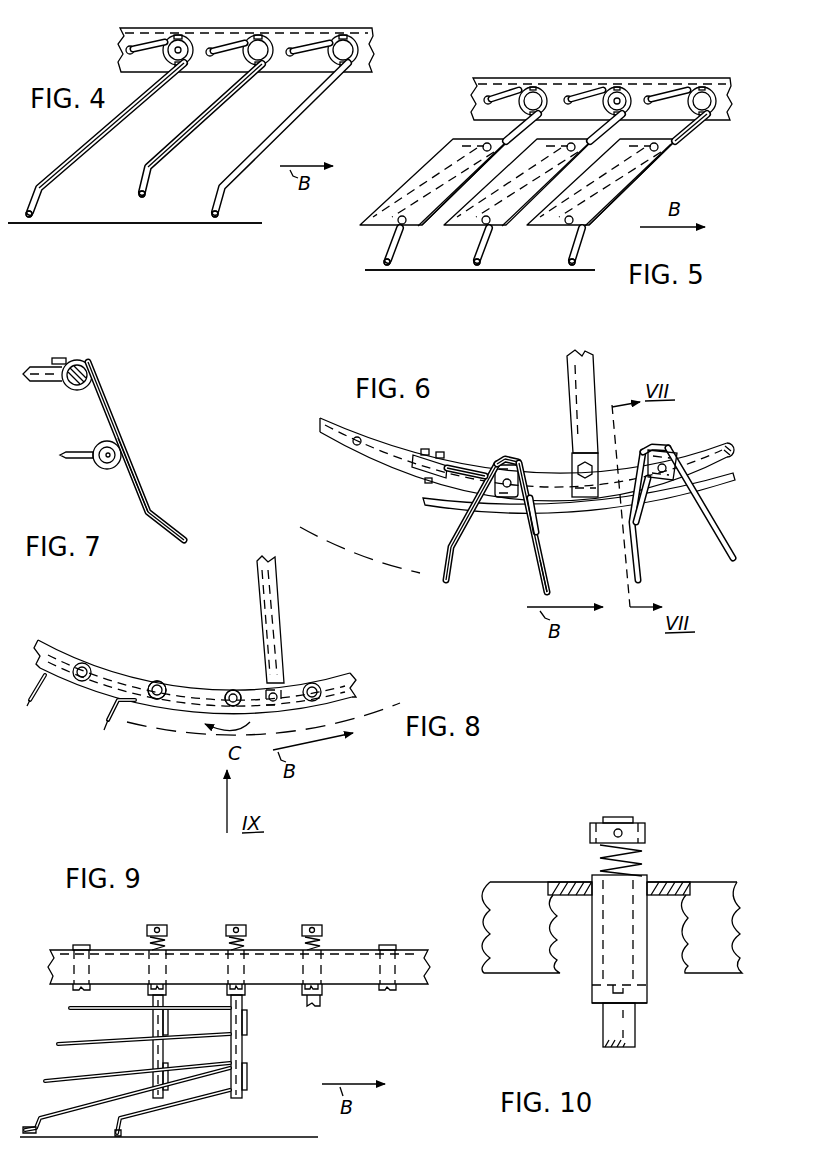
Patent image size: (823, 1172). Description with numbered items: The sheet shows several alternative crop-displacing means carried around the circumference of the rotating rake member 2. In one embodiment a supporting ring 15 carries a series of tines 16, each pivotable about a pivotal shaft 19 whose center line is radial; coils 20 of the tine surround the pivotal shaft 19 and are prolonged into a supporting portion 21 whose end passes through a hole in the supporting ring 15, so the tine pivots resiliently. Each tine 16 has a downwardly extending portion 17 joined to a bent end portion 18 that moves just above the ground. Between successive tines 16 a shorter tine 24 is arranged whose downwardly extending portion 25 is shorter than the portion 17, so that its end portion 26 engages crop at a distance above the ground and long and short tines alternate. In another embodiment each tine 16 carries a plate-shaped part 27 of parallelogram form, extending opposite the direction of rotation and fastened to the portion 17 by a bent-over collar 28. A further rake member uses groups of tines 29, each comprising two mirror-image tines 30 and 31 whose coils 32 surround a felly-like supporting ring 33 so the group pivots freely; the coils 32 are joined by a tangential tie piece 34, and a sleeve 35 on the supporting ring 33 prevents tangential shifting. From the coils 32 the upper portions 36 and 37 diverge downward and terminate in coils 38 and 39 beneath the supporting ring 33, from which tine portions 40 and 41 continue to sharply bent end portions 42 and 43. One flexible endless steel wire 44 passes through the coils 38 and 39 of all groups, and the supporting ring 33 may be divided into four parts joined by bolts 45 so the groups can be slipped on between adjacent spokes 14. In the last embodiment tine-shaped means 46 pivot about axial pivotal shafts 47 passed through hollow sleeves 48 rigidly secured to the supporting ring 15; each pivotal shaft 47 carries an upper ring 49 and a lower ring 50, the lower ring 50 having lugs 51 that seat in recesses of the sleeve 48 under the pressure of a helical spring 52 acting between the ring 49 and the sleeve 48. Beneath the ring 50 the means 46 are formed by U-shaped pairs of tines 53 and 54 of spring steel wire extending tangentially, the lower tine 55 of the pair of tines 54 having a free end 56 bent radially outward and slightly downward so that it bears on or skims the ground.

In FIG. 4, the rake member 2 is at (53, 166).
In FIG. 5, the rake member 2 is at (438, 152).
In FIG. 6, the rake member 2 is at (326, 532).
In FIG. 8, the rake member 2 is at (381, 720).
In FIG. 6, the spokes 14 is at (583, 375).
In FIG. 8, the spokes 14 is at (281, 643).
In FIG. 4, the supporting ring 15 is at (357, 79).
In FIG. 5, the supporting ring 15 is at (472, 113).
In FIG. 8, the supporting ring 15 is at (356, 680).
In FIG. 9, the supporting ring 15 is at (414, 985).
In FIG. 10, the supporting ring 15 is at (493, 897).
In FIG. 4, the tine 16 is at (296, 132).
In FIG. 5, the tine 16 is at (385, 244).
In FIG. 4, the downwardly extending portion 17 is at (94, 148).
In FIG. 5, the downwardly extending portion 17 is at (688, 144).
In FIG. 4, the end portion 18 is at (36, 212).
In FIG. 5, the end portion 18 is at (578, 259).
In FIG. 4, the pivotal shaft 19 is at (357, 51).
In FIG. 5, the pivotal shaft 19 is at (626, 92).
In FIG. 4, the coils 20 is at (355, 38).
In FIG. 5, the coils 20 is at (546, 89).
In FIG. 4, the supporting portion 21 is at (160, 38).
In FIG. 5, the supporting portion 21 is at (516, 85).
In FIG. 4, the tine 24 is at (190, 125).
In FIG. 4, the downwardly extending portion 25 is at (206, 118).
In FIG. 4, the end portion 26 is at (150, 183).
In FIG. 5, the plate-shaped part 27 is at (430, 170).
In FIG. 5, the collar 28 is at (650, 180).
In FIG. 6, the group of tines 29 is at (437, 616).
In FIG. 7, the tine 30 is at (126, 433).
In FIG. 6, the tine 30 is at (452, 546).
In FIG. 6, the tine 31 is at (551, 556).
In FIG. 7, the coil 32 is at (88, 362).
In FIG. 6, the coil 32 is at (497, 463).
In FIG. 7, the supporting ring 33 is at (44, 384).
In FIG. 6, the supporting ring 33 is at (344, 443).
In FIG. 7, the tie piece 34 is at (64, 358).
In FIG. 6, the tie piece 34 is at (510, 460).
In FIG. 6, the sleeve 35 is at (520, 460).
In FIG. 7, the upper portion 36 is at (108, 400).
In FIG. 6, the upper portion 36 is at (474, 468).
In FIG. 6, the upper portion 37 is at (530, 480).
In FIG. 7, the coil 38 is at (105, 470).
In FIG. 6, the coil 38 is at (462, 522).
In FIG. 6, the coil 39 is at (534, 528).
In FIG. 7, the tine portion 40 is at (150, 493).
In FIG. 6, the tine portion 40 is at (462, 549).
In FIG. 6, the tine portion 41 is at (541, 553).
In FIG. 7, the end portion 42 is at (192, 530).
In FIG. 6, the end portion 42 is at (450, 577).
In FIG. 6, the end portion 43 is at (546, 588).
In FIG. 7, the steel wire 44 is at (66, 462).
In FIG. 6, the steel wire 44 is at (420, 503).
In FIG. 6, the bolts 45 is at (420, 480).
In FIG. 9, the means 46 is at (310, 1056).
In FIG. 8, the pivotal shaft 47 is at (232, 686).
In FIG. 9, the pivotal shaft 47 is at (152, 1017).
In FIG. 10, the pivotal shaft 47 is at (636, 1038).
In FIG. 8, the hollow sleeve 48 is at (312, 681).
In FIG. 9, the hollow sleeve 48 is at (167, 944).
In FIG. 10, the hollow sleeve 48 is at (648, 880).
In FIG. 9, the ring 49 is at (311, 942).
In FIG. 10, the ring 49 is at (645, 830).
In FIG. 9, the ring 50 is at (246, 991).
In FIG. 10, the ring 50 is at (647, 1002).
In FIG. 10, the lug 51 is at (616, 997).
In FIG. 10, the helical spring 52 is at (602, 862).
In FIG. 8, the tine 53 is at (126, 683).
In FIG. 9, the tine 53 is at (184, 1011).
In FIG. 9, the pair of tines 54 is at (216, 1075).
In FIG. 9, the lower tine 55 is at (168, 1112).
In FIG. 8, the free end 56 is at (108, 737).
In FIG. 9, the free end 56 is at (38, 1129).